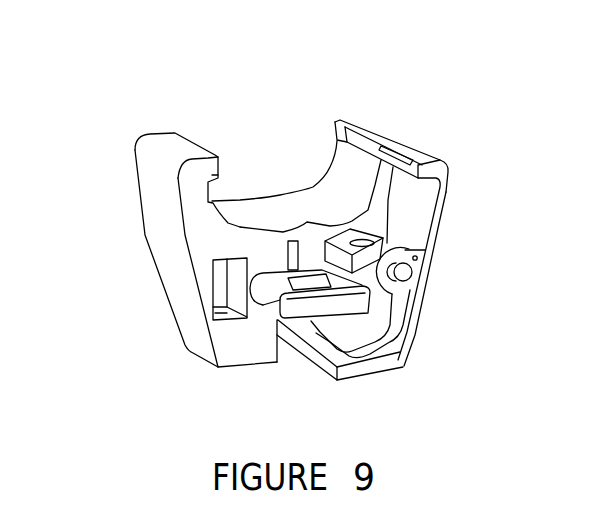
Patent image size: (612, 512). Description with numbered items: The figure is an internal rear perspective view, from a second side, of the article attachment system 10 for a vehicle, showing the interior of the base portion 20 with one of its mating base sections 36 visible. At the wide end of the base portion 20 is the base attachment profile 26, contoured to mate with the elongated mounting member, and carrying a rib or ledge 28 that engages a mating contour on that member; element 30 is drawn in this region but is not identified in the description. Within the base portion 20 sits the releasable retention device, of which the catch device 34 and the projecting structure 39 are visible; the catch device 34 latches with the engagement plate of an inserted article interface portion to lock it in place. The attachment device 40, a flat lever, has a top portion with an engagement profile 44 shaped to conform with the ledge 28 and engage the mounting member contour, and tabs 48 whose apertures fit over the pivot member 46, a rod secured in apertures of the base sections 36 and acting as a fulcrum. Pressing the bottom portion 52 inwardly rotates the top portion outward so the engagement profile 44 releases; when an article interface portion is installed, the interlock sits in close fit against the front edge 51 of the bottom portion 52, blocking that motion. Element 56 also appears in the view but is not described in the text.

The attachment system 10 is at (428, 70).
The base portion 20 is at (443, 153).
The base attachment profile 26 is at (268, 132).
The ledge 28 is at (219, 163).
The channel surface 30 is at (267, 203).
The catch device 34 is at (305, 353).
The base sections 36 is at (158, 220).
The projecting structure 39 is at (268, 303).
The attachment device 40 is at (417, 198).
The engagement profile 44 is at (363, 144).
The pivot member 46 is at (413, 273).
The tabs 48 is at (406, 252).
The front edge 51 is at (322, 370).
The bottom portion 52 is at (367, 377).
The spring 56 is at (410, 338).